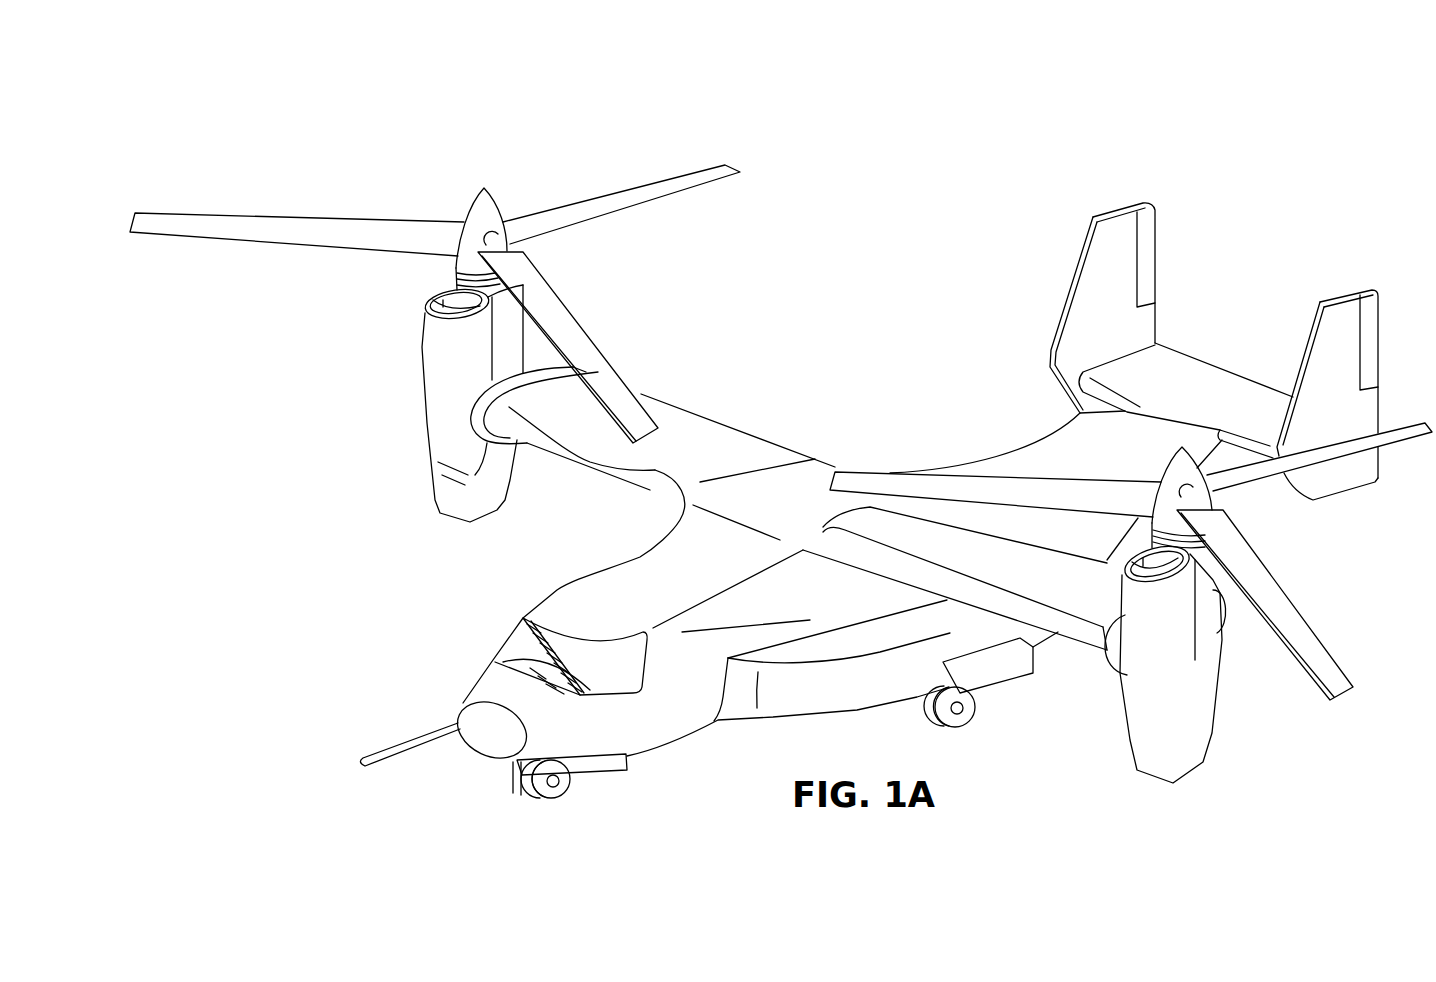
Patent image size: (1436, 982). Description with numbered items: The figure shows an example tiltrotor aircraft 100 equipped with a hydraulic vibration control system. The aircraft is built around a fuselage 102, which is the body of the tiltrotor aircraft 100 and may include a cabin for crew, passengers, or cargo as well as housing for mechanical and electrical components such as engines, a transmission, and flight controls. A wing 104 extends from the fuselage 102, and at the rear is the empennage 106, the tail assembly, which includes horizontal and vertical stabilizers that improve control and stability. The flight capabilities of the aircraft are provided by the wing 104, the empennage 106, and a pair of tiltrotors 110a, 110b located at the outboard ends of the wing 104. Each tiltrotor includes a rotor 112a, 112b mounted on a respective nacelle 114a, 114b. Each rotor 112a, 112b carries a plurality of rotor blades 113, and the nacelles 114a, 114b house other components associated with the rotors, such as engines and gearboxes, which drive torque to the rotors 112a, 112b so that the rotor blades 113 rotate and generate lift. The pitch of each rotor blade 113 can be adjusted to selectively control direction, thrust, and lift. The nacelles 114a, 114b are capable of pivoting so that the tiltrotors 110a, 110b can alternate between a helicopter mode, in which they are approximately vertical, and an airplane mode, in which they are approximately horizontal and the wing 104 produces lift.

The tiltrotor aircraft 100 is at (289, 122).
The fuselage 102 is at (673, 733).
The wing 104 is at (727, 427).
The empennage 106 is at (1190, 357).
The tiltrotor 110a is at (1257, 514).
The tiltrotor 110b is at (404, 276).
The rotor 112a is at (1165, 471).
The rotor 112b is at (473, 202).
The rotor blades 113 is at (627, 208).
The nacelle 114a is at (1217, 723).
The nacelle 114b is at (423, 410).